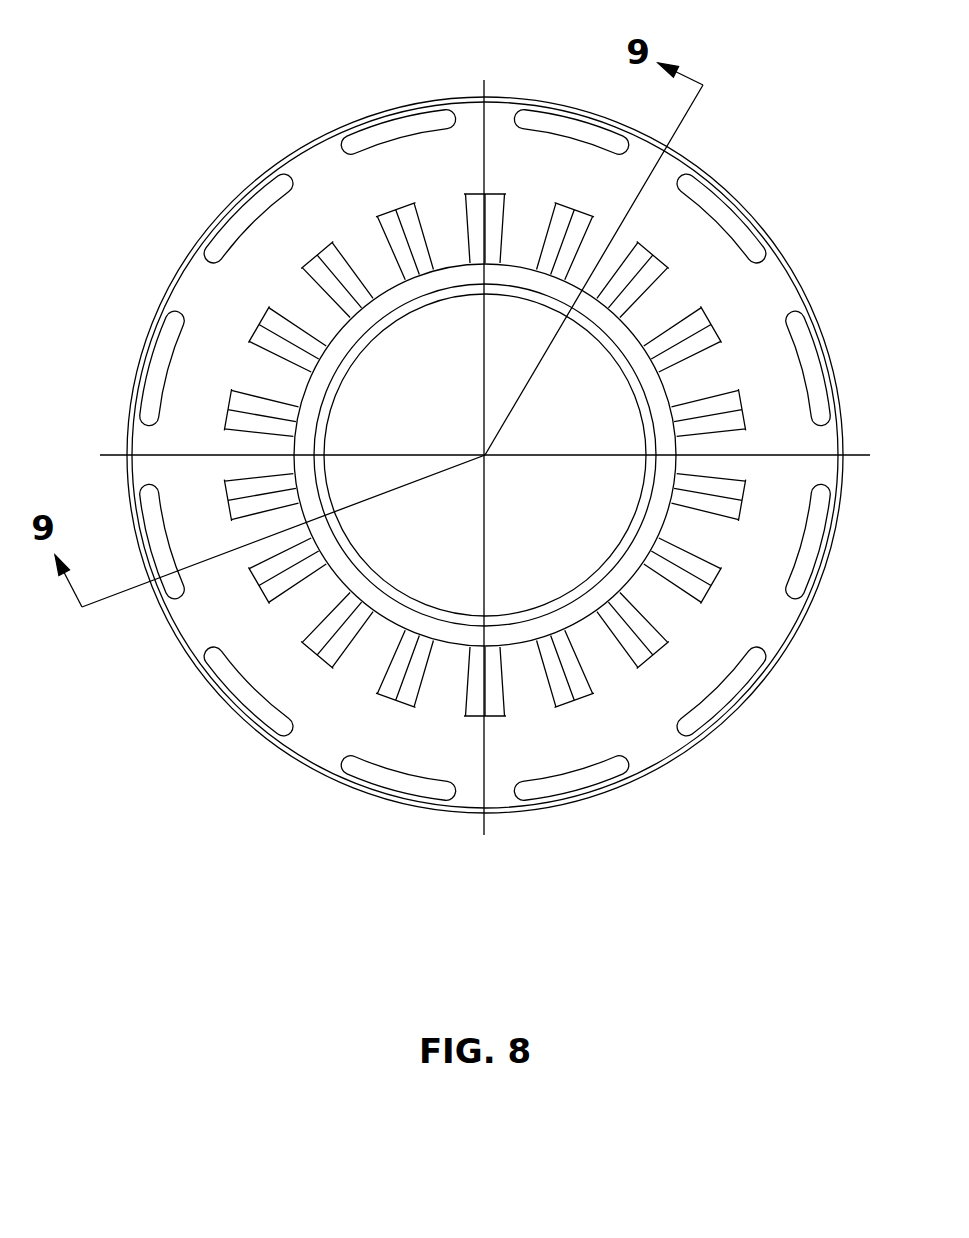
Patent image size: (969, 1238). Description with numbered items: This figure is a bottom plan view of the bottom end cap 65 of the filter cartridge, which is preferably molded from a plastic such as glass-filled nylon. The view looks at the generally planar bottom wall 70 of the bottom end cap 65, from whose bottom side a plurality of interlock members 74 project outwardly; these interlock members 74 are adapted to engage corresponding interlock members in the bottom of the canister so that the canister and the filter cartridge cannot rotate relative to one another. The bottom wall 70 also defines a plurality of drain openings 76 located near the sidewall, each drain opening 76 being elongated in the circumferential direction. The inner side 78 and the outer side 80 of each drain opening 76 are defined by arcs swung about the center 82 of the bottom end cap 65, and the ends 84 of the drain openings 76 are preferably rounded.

The bottom end cap 65 is at (338, 845).
The bottom wall 70 is at (696, 657).
The interlock members 74 is at (727, 488).
The drain openings 76 is at (810, 562).
The inner side 78 is at (260, 692).
The outer side 80 is at (237, 698).
The center 82 is at (487, 457).
The ends 84 is at (205, 648).